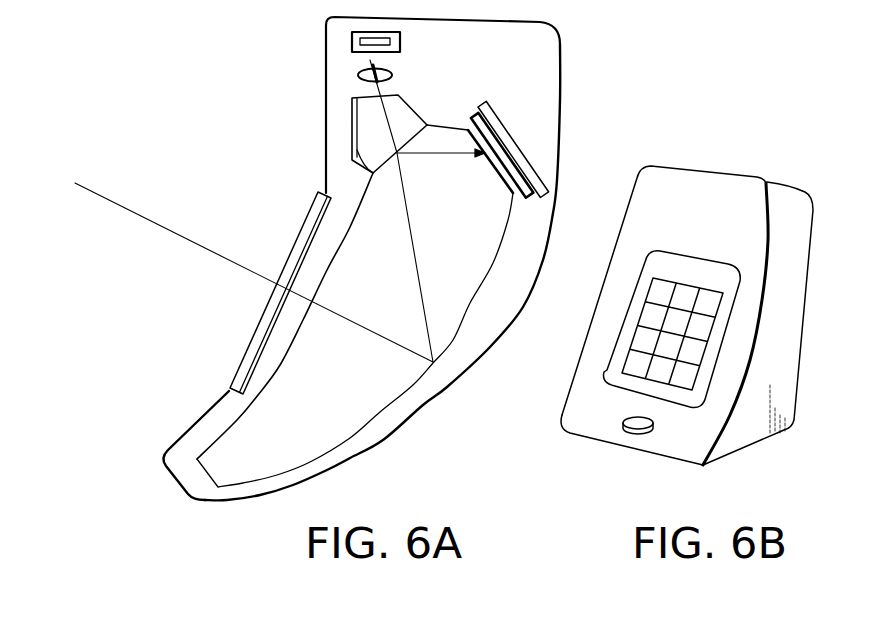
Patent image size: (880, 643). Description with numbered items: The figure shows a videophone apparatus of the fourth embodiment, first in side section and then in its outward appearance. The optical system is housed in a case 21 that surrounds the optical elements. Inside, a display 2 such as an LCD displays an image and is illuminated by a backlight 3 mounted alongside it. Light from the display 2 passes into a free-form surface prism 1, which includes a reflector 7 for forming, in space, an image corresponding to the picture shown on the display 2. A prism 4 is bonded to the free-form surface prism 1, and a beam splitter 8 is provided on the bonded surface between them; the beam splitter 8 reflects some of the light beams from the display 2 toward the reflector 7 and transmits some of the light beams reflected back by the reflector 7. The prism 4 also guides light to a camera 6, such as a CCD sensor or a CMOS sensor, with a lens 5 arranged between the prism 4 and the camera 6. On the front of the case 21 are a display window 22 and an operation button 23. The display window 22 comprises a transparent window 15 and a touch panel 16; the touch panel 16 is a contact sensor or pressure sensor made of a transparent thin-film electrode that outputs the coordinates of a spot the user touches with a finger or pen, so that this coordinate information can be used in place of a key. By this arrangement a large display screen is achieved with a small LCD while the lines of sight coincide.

In FIG. 6A, the free-form surface prism 1 is at (367, 410).
In FIG. 6A, the display 2 is at (513, 165).
In FIG. 6A, the backlight 3 is at (501, 117).
In FIG. 6A, the prism 4 is at (402, 116).
In FIG. 6A, the lens 5 is at (358, 76).
In FIG. 6A, the camera 6 is at (352, 43).
In FIG. 6A, the reflector 7 is at (413, 385).
In FIG. 6A, the beam splitter 8 is at (357, 150).
In FIG. 6A, the transparent window 15 is at (262, 341).
In FIG. 6A, the touch panel 16 is at (304, 224).
In FIG. 6B, the touch panel 16 is at (640, 343).
In FIG. 6A, the case 21 is at (238, 491).
In FIG. 6B, the case 21 is at (763, 417).
In FIG. 6B, the display window 22 is at (683, 407).
In FIG. 6B, the operation button 23 is at (630, 438).